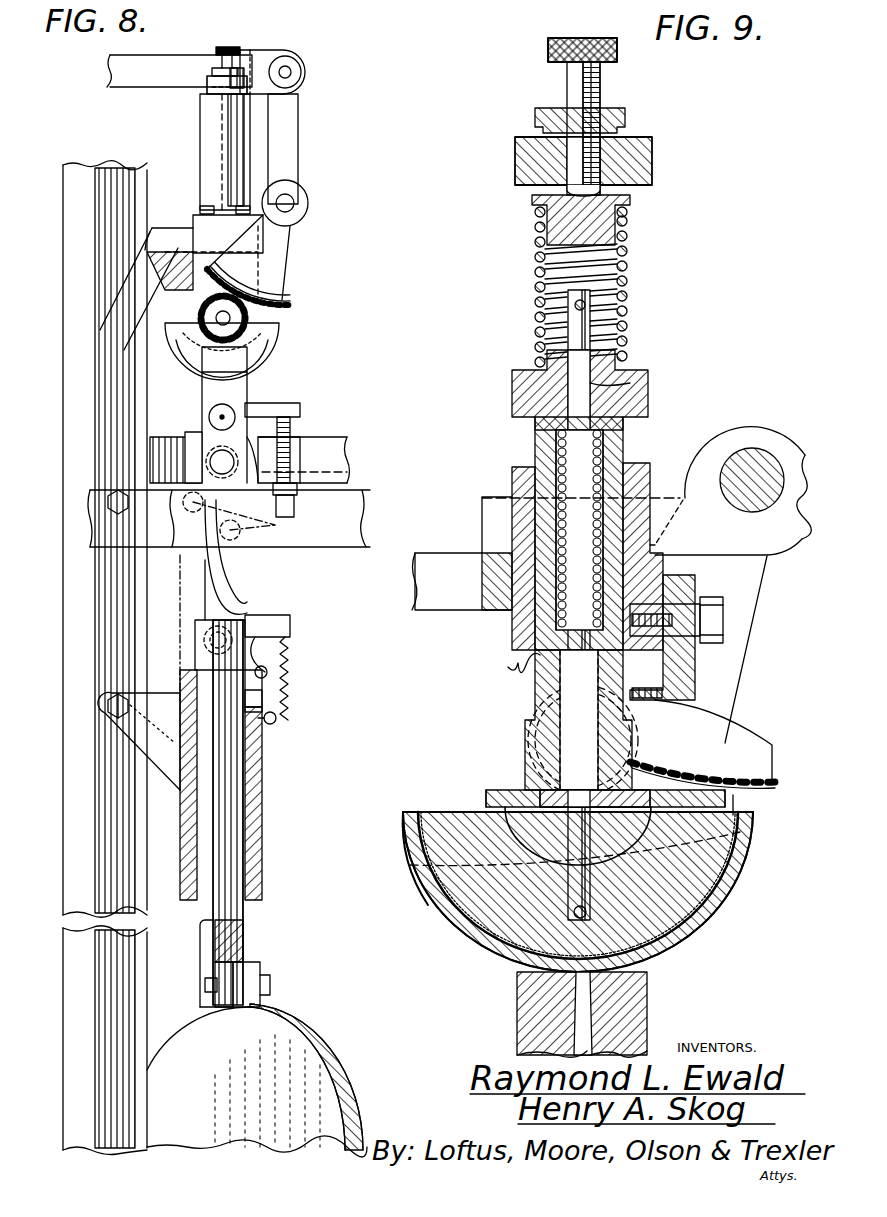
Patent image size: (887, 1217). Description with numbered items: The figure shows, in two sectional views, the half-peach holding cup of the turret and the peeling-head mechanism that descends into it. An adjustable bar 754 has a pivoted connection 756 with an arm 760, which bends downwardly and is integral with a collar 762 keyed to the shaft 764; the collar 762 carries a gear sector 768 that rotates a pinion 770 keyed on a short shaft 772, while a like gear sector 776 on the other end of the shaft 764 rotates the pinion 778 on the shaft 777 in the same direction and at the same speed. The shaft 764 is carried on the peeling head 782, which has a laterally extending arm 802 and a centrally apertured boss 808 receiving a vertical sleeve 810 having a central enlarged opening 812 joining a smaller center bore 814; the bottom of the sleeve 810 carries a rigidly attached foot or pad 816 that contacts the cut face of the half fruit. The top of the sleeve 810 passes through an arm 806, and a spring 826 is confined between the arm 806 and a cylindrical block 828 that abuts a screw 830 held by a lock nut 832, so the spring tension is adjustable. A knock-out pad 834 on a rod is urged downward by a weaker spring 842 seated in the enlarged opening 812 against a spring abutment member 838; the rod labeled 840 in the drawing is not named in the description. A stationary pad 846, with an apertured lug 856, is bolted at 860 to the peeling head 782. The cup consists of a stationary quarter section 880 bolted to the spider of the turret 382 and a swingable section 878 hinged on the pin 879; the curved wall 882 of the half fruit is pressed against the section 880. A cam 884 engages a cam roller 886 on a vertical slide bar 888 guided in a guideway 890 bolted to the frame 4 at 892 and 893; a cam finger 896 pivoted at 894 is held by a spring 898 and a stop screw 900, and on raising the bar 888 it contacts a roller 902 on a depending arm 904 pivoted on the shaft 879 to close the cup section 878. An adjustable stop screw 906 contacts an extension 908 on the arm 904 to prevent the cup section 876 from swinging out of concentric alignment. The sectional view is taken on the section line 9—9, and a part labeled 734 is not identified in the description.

In FIG. 8, the frame 4 is at (121, 951).
In FIG. 8, the section line 9— 9 is at (205, 30).
In FIG. 8, the spider of the turret 382 is at (330, 452).
In FIG. 9, the direction arrow 734 is at (663, 408).
In FIG. 8, the adjustable bar 754 is at (133, 80).
In FIG. 8, the pivoted connection 756 is at (260, 45).
In FIG. 8, the arm 760 is at (285, 118).
In FIG. 9, the collar 762 is at (768, 420).
In FIG. 8, the shaft 764 is at (285, 203).
In FIG. 9, the shaft 764 is at (740, 510).
In FIG. 8, the gear sector 768 is at (272, 248).
In FIG. 8, the pinion 770 is at (255, 291).
In FIG. 8, the short shaft 772 is at (230, 320).
In FIG. 9, the gear sector 776 is at (715, 715).
In FIG. 9, the shaft 777 is at (428, 872).
In FIG. 9, the pinion 778 is at (525, 755).
In FIG. 8, the peeling head 782 is at (170, 228).
In FIG. 9, the peeling head 782 is at (435, 598).
In FIG. 9, the laterally extending arm 802 is at (515, 180).
In FIG. 9, the arm 806 is at (512, 385).
In FIG. 9, the centrally apertured boss 808 is at (650, 470).
In FIG. 9, the vertical sleeve 810 is at (545, 425).
In FIG. 9, the central enlarged opening 812 is at (535, 483).
In FIG. 9, the center bore 814 is at (648, 375).
In FIG. 9, the foot or pad 816 is at (488, 798).
In FIG. 9, the spring 826 is at (627, 275).
In FIG. 9, the cylindrical block 828 is at (605, 230).
In FIG. 9, the screw 830 is at (600, 86).
In FIG. 9, the lock nut 832 is at (625, 118).
In FIG. 9, the knock-out pad 834 is at (640, 765).
In FIG. 9, the spring abutment member 838 is at (530, 660).
In FIG. 9, the rod 840 is at (575, 305).
In FIG. 9, the spring 842 is at (562, 445).
In FIG. 9, the stationary pad 846 is at (742, 800).
In FIG. 9, the apertured lug 856 is at (695, 668).
In FIG. 9, the bolt 860 is at (723, 622).
In FIG. 8, the cup section 876 is at (282, 345).
In FIG. 9, the cup section 876 is at (710, 942).
In FIG. 8, the swingable cup section 878 is at (268, 360).
In FIG. 9, the swingable cup section 878 is at (720, 900).
In FIG. 8, the pin 879 is at (235, 417).
In FIG. 9, the stationary cup section 880 is at (440, 928).
In FIG. 9, the curved wall of the half fruit 882 is at (420, 810).
In FIG. 8, the cam 884 is at (320, 1062).
In FIG. 8, the cam roller 886 is at (248, 975).
In FIG. 8, the vertical slide bar 888 is at (243, 928).
In FIG. 8, the guideway 890 is at (262, 808).
In FIG. 8, the bolt 892 is at (158, 704).
In FIG. 8, the bolt 893 is at (229, 595).
In FIG. 8, the pivot 894 is at (245, 630).
In FIG. 8, the cam finger 896 is at (222, 565).
In FIG. 8, the spring 898 is at (278, 716).
In FIG. 8, the stop screw 900 is at (272, 672).
In FIG. 8, the roller 902 is at (212, 462).
In FIG. 8, the depending arm 904 is at (222, 437).
In FIG. 8, the adjustable stop screw 906 is at (347, 472).
In FIG. 8, the extension 908 is at (300, 410).